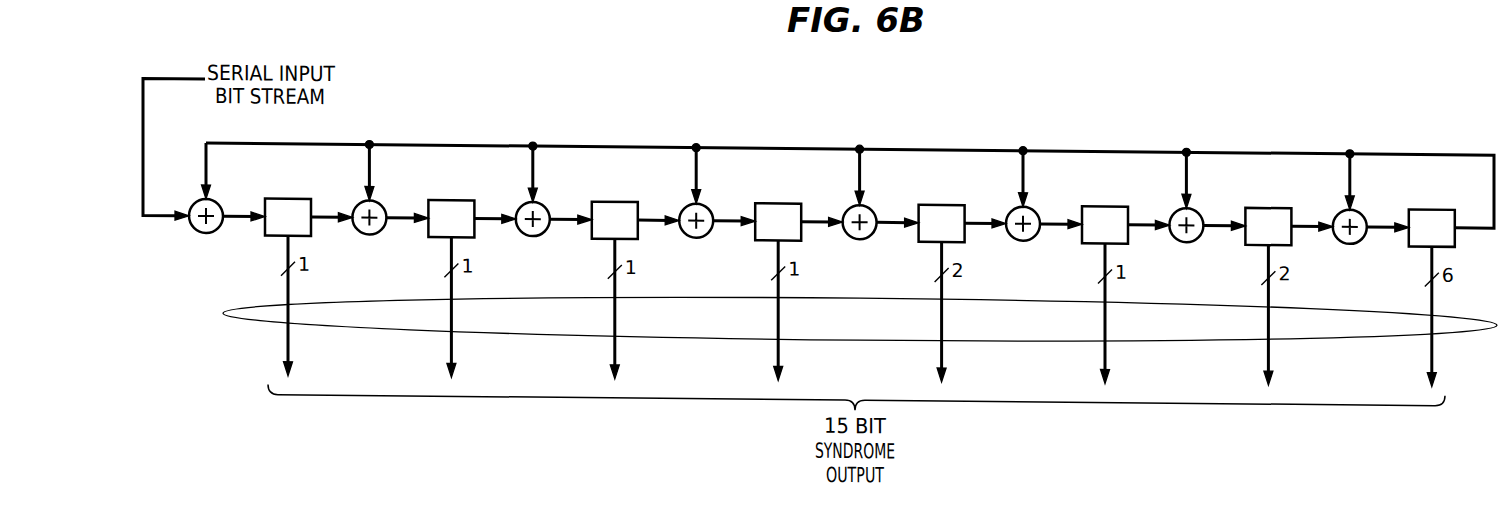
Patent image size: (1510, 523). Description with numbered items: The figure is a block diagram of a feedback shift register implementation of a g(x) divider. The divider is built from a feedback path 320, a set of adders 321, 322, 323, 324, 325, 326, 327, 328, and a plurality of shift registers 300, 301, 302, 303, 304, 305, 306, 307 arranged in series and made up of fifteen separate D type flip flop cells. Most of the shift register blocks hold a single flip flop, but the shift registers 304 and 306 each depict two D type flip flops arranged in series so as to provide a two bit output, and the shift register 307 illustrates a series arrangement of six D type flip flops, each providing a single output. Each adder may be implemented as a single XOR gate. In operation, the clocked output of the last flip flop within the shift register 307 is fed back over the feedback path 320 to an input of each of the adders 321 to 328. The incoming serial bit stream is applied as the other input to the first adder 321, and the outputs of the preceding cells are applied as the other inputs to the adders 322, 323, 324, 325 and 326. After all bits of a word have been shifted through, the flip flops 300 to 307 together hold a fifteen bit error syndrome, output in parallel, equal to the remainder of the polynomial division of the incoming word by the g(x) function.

The shift register 300 is at (272, 197).
The shift register 301 is at (435, 197).
The shift register 302 is at (599, 197).
The shift register 303 is at (762, 197).
The shift register 304 is at (926, 197).
The shift register 305 is at (1089, 197).
The shift register 306 is at (1252, 197).
The shift register 307 is at (1416, 197).
The feedback path 320 is at (1466, 143).
The adder 321 is at (194, 204).
The adder 322 is at (356, 204).
The adder 323 is at (520, 204).
The adder 324 is at (683, 204).
The adder 325 is at (847, 204).
The adder 326 is at (1010, 204).
The adder 327 is at (1173, 204).
The adder 328 is at (1337, 204).